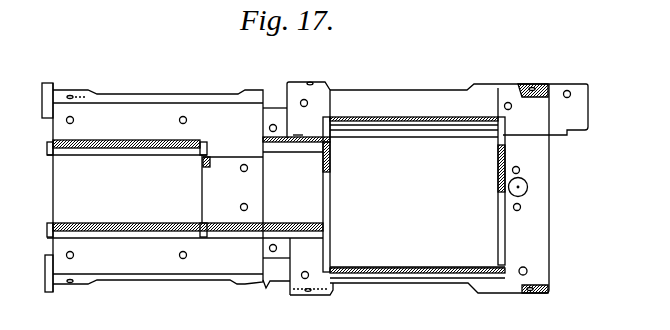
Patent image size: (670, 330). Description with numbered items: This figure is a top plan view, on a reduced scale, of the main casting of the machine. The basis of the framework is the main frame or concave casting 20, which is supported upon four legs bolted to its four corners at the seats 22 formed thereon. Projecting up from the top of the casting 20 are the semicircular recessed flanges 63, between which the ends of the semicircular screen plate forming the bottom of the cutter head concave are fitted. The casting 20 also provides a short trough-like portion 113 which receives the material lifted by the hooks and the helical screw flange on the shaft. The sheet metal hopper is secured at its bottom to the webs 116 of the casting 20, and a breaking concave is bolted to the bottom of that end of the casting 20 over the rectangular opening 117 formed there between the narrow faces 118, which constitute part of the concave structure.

The main frame casting 20 is at (459, 174).
The seats 22 is at (55, 92).
The semicircular recessed flanges 63 is at (333, 207).
The trough-like portion 113 is at (233, 184).
The webs 116 is at (166, 187).
The rectangular opening 117 is at (127, 189).
The narrow faces 118 is at (150, 148).